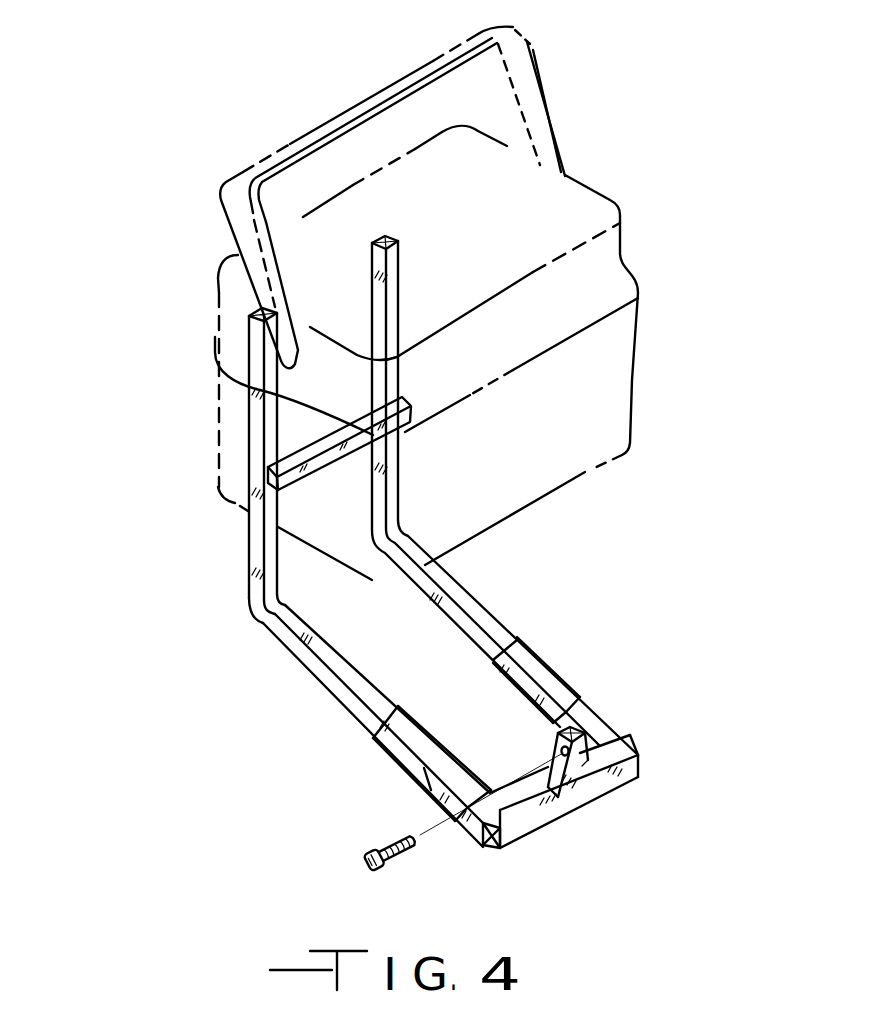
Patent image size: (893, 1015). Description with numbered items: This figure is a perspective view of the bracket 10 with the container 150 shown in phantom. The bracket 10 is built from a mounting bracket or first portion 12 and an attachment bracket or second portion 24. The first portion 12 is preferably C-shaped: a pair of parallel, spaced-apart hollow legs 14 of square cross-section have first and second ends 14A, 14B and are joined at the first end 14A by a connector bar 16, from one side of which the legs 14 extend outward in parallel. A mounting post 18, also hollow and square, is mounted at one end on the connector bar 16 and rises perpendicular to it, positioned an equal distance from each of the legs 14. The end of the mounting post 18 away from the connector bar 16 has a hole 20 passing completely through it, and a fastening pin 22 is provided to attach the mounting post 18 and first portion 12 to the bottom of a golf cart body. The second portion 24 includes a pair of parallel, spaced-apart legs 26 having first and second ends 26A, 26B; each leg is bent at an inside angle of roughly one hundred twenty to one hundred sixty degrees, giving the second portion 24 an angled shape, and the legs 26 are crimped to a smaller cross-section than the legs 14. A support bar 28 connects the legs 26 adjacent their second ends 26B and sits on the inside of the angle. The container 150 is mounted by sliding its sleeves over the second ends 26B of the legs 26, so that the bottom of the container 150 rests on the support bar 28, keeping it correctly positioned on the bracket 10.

The bracket 10 is at (314, 730).
The first portion 12 is at (420, 776).
The legs 14 is at (430, 791).
The first end 14A is at (642, 776).
The second end 14B is at (540, 630).
The connector bar 16 is at (630, 770).
The mounting post 18 is at (577, 777).
The hole 20 is at (558, 800).
The fastening pin 22 is at (397, 857).
The second portion 24 is at (250, 607).
The legs 26 is at (178, 504).
The first end 26A is at (483, 617).
The second end 26B is at (253, 338).
The support bar 28 is at (265, 480).
The container 150 is at (632, 377).